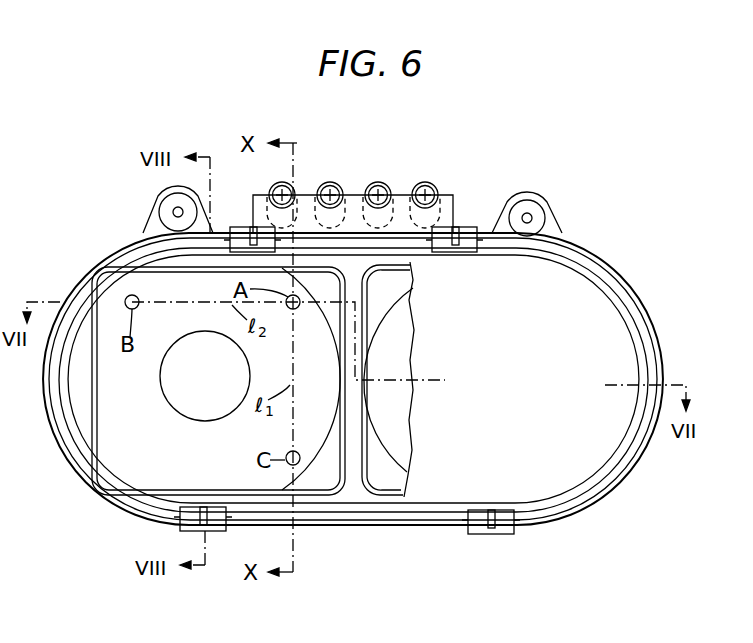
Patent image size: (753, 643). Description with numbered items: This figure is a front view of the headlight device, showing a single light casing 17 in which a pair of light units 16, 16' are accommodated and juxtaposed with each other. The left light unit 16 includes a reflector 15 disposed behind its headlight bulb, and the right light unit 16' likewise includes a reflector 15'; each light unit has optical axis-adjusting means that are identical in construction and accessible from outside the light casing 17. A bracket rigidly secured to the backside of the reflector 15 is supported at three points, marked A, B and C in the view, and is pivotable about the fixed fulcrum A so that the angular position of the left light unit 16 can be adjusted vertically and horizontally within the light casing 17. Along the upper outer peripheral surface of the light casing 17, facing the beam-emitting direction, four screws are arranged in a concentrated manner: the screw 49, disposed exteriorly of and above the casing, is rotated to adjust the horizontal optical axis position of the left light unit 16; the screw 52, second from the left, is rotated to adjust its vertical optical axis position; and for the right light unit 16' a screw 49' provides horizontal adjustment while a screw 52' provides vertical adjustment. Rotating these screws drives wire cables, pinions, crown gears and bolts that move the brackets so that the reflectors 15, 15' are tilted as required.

The reflector 15 is at (203, 352).
The light unit 16 is at (189, 393).
The light casing 17 is at (615, 277).
The reflector 15' is at (418, 379).
The light unit 16' is at (426, 380).
The screw 49 is at (299, 171).
The screw 52 is at (346, 173).
The screw 52' is at (398, 177).
The screw 49' is at (445, 177).